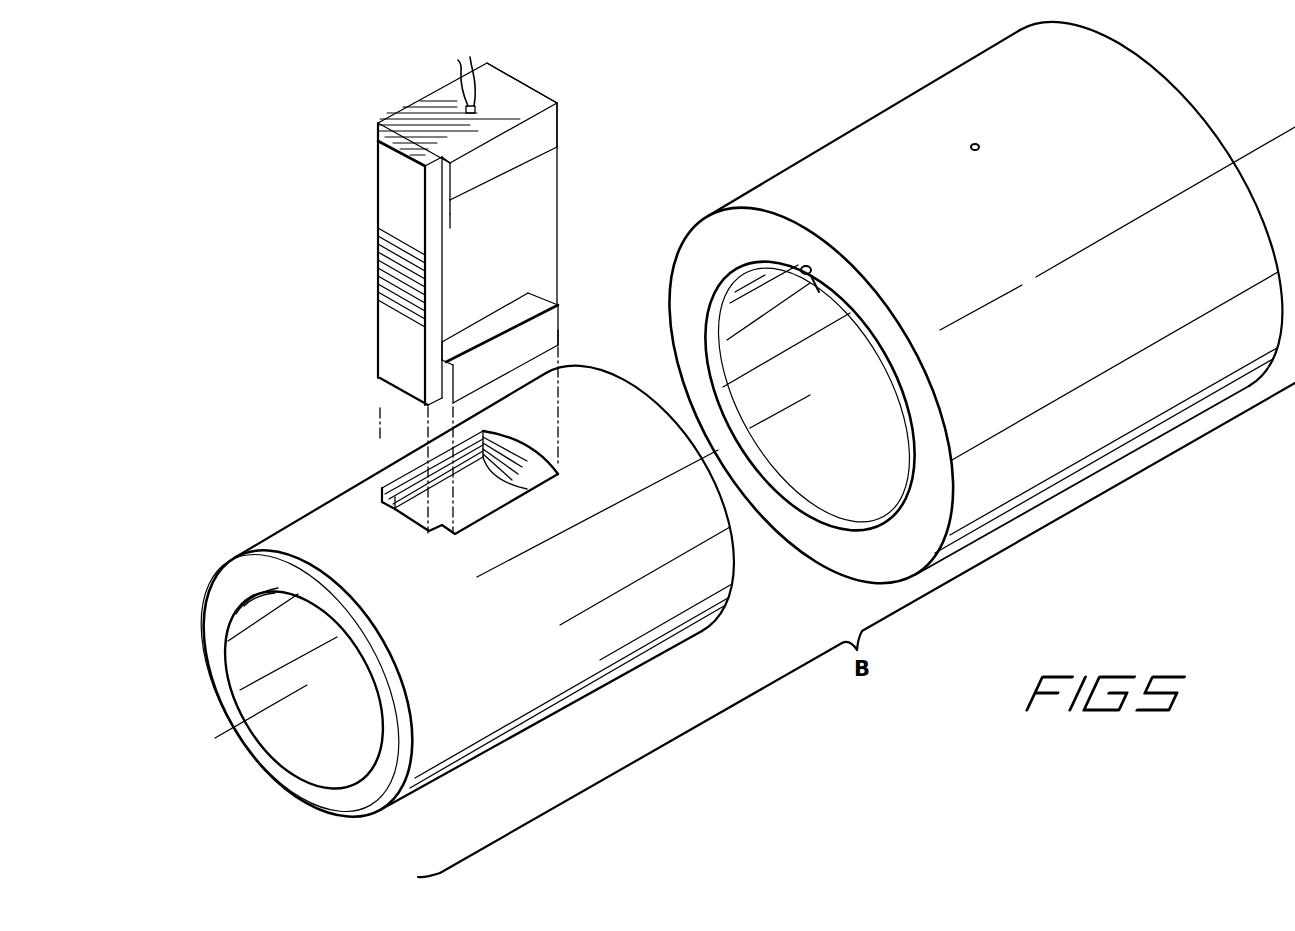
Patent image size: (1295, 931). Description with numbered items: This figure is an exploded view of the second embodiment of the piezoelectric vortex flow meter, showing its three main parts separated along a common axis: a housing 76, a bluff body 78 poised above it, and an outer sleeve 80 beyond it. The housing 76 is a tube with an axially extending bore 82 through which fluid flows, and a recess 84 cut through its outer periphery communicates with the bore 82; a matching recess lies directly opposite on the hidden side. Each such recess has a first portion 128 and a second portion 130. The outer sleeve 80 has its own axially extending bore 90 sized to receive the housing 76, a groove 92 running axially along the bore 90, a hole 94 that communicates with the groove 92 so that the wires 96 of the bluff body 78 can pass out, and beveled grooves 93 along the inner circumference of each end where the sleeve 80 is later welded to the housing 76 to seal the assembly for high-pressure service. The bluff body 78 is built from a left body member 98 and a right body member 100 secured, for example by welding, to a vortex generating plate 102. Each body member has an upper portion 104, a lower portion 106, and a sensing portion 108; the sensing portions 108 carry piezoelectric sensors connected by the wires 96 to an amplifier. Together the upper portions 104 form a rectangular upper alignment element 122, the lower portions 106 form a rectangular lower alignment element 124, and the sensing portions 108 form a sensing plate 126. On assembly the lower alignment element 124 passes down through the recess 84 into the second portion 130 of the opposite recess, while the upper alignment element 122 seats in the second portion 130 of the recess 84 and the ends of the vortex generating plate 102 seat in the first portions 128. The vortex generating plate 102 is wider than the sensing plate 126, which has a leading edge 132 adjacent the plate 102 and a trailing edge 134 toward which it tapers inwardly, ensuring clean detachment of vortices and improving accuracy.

The housing 76 is at (348, 502).
The bluff body 78 is at (583, 158).
The outer sleeve 80 is at (870, 140).
The axially extending bore 82 is at (242, 640).
The recess 84 is at (535, 442).
The axially extending bore 90 is at (838, 495).
The groove 92 is at (811, 282).
The beveled grooves 93 is at (713, 317).
The hole 94 is at (980, 145).
The wires 96 is at (473, 62).
The left body member 98 is at (438, 86).
The right body member 100 is at (554, 80).
The vortex generating plate 102 is at (390, 260).
The upper portion 104 is at (507, 75).
The lower portion 106 is at (543, 328).
The sensing portion 108 is at (522, 213).
The upper alignment element 122 is at (370, 120).
The lower alignment element 124 is at (572, 324).
The sensing plate 126 is at (548, 235).
The first portion 128 is at (420, 515).
The second portion 130 is at (498, 495).
The leading edge 132 is at (440, 290).
The trailing edge 134 is at (528, 260).